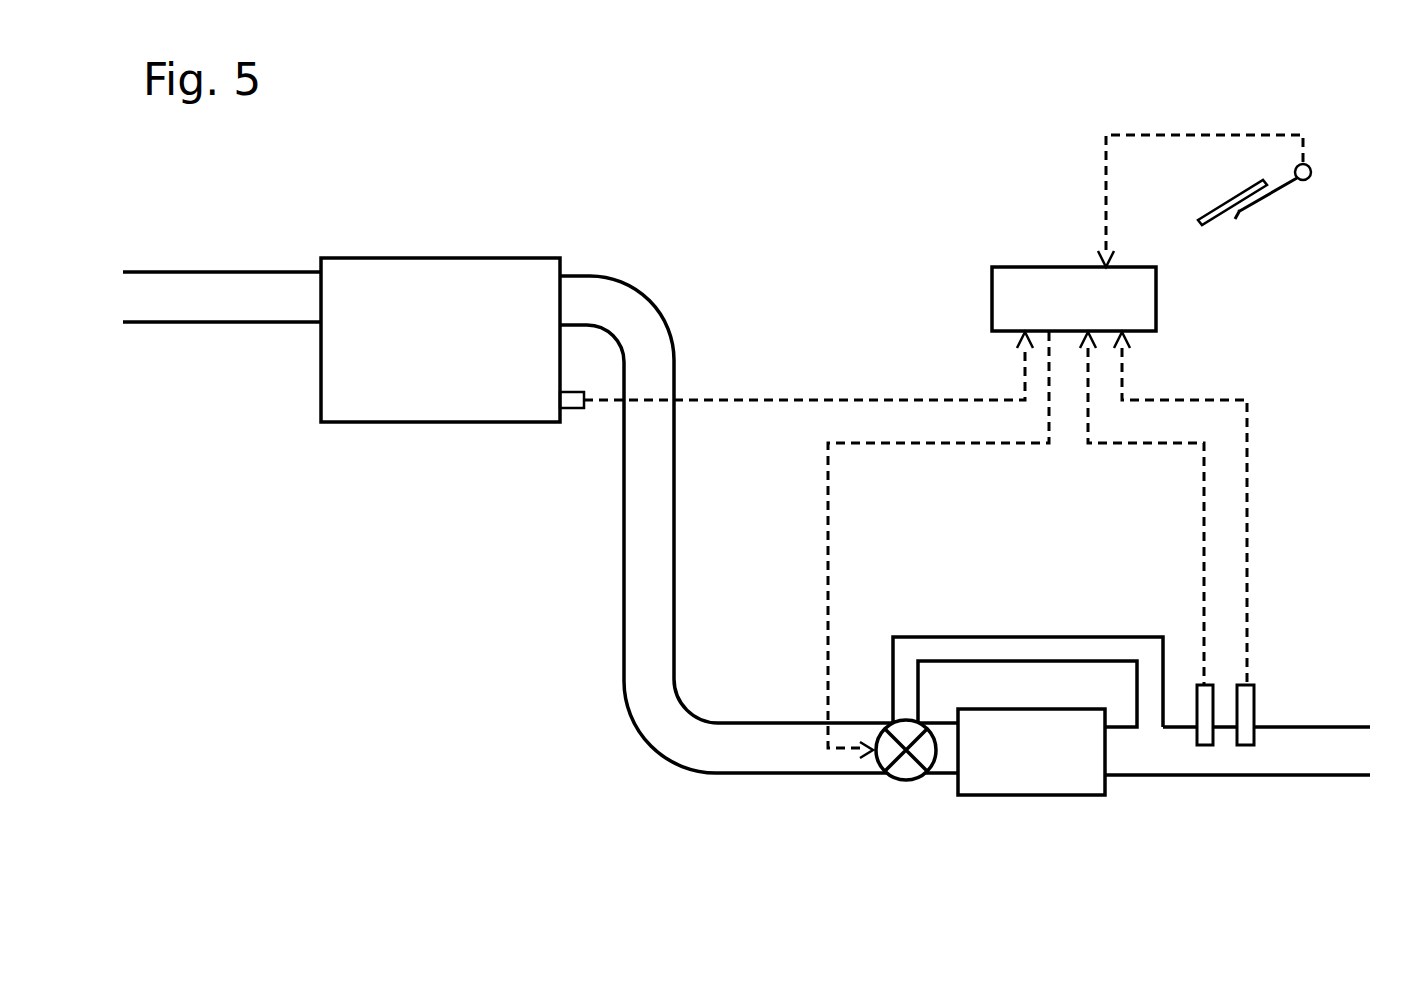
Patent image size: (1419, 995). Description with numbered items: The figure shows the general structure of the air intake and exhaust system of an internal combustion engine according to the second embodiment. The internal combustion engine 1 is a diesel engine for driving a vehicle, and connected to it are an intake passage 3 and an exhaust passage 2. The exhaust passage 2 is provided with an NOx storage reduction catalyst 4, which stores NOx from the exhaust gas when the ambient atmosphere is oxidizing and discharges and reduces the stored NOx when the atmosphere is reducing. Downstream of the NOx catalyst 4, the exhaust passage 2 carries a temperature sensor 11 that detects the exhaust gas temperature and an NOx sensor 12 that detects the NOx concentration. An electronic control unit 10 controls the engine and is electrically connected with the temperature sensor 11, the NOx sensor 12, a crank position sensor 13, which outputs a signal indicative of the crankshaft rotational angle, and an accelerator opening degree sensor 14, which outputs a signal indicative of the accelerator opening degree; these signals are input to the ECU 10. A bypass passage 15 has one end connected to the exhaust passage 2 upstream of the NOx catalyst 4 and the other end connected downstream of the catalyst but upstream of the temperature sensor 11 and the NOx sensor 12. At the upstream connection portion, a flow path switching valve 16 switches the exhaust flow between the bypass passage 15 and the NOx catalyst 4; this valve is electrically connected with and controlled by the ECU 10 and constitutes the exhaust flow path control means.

The internal combustion engine 1 is at (452, 423).
The exhaust passage 2 is at (623, 558).
The intake passage 3 is at (226, 270).
The NOx storage reduction catalyst 4 is at (1038, 797).
The electronic control unit 10 is at (1156, 295).
The temperature sensor 11 is at (1213, 710).
The NOx sensor 12 is at (1254, 710).
The crank position sensor 13 is at (583, 409).
The accelerator opening degree sensor 14 is at (1305, 182).
The bypass passage 15 is at (1025, 636).
The flow path switching valve 16 is at (877, 730).